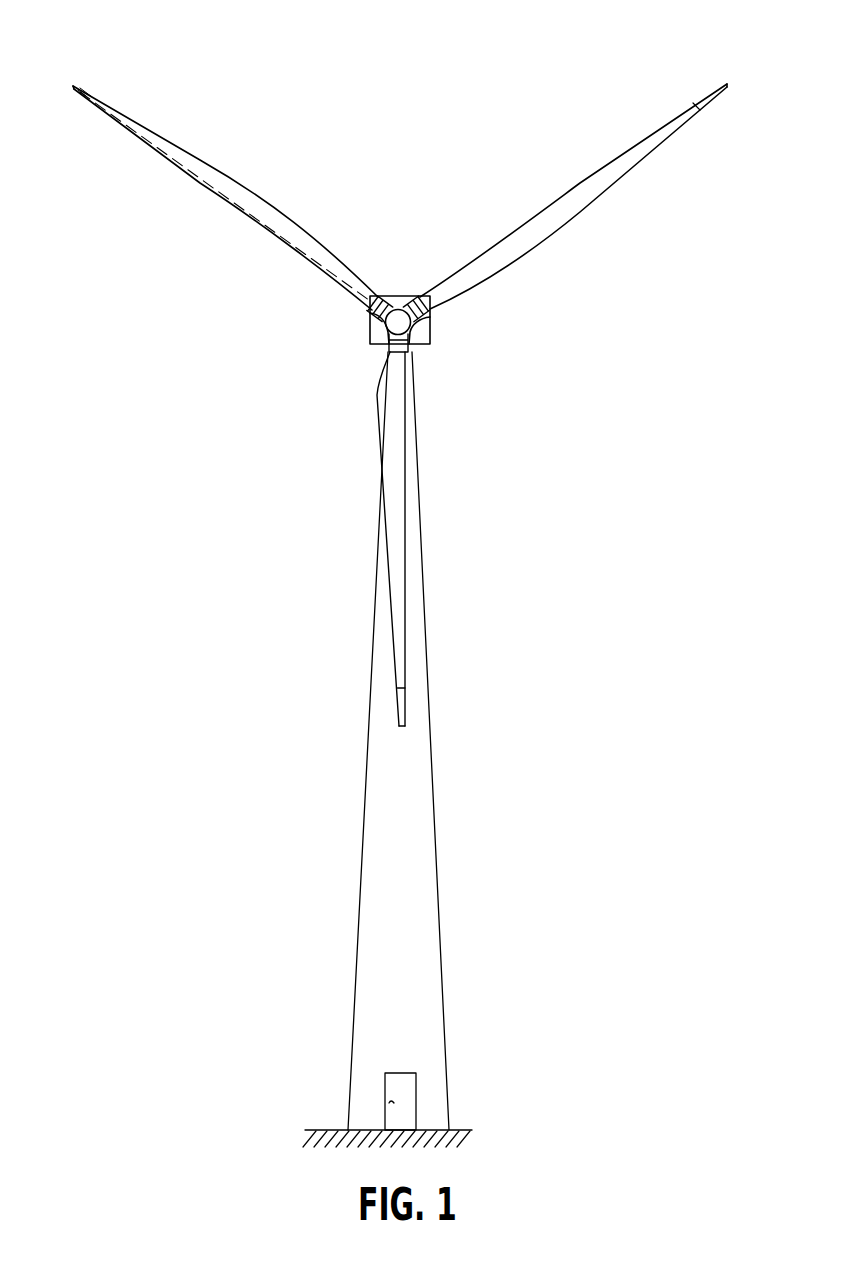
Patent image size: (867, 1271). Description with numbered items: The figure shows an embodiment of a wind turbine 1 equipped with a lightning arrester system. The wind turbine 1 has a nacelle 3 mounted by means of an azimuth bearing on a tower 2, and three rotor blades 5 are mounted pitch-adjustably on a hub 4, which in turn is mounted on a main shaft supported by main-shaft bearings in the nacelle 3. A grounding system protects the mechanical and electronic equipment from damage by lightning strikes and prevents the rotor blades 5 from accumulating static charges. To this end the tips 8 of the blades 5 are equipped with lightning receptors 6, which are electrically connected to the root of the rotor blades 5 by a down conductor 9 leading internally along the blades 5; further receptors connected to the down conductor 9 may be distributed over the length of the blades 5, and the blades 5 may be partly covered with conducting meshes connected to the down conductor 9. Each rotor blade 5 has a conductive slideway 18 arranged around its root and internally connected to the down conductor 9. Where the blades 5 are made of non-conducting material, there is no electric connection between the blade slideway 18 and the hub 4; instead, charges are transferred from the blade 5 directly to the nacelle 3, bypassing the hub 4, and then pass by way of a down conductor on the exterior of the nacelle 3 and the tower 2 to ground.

The wind turbine 1 is at (338, 964).
The tower 2 is at (428, 820).
The nacelle 3 is at (429, 342).
The hub 4 is at (372, 318).
The rotor blade 5 is at (398, 577).
The lightning receptor 6 is at (400, 703).
The tip 8 is at (74, 86).
The down conductor 9 is at (238, 203).
The conductive slideway 18 is at (391, 299).